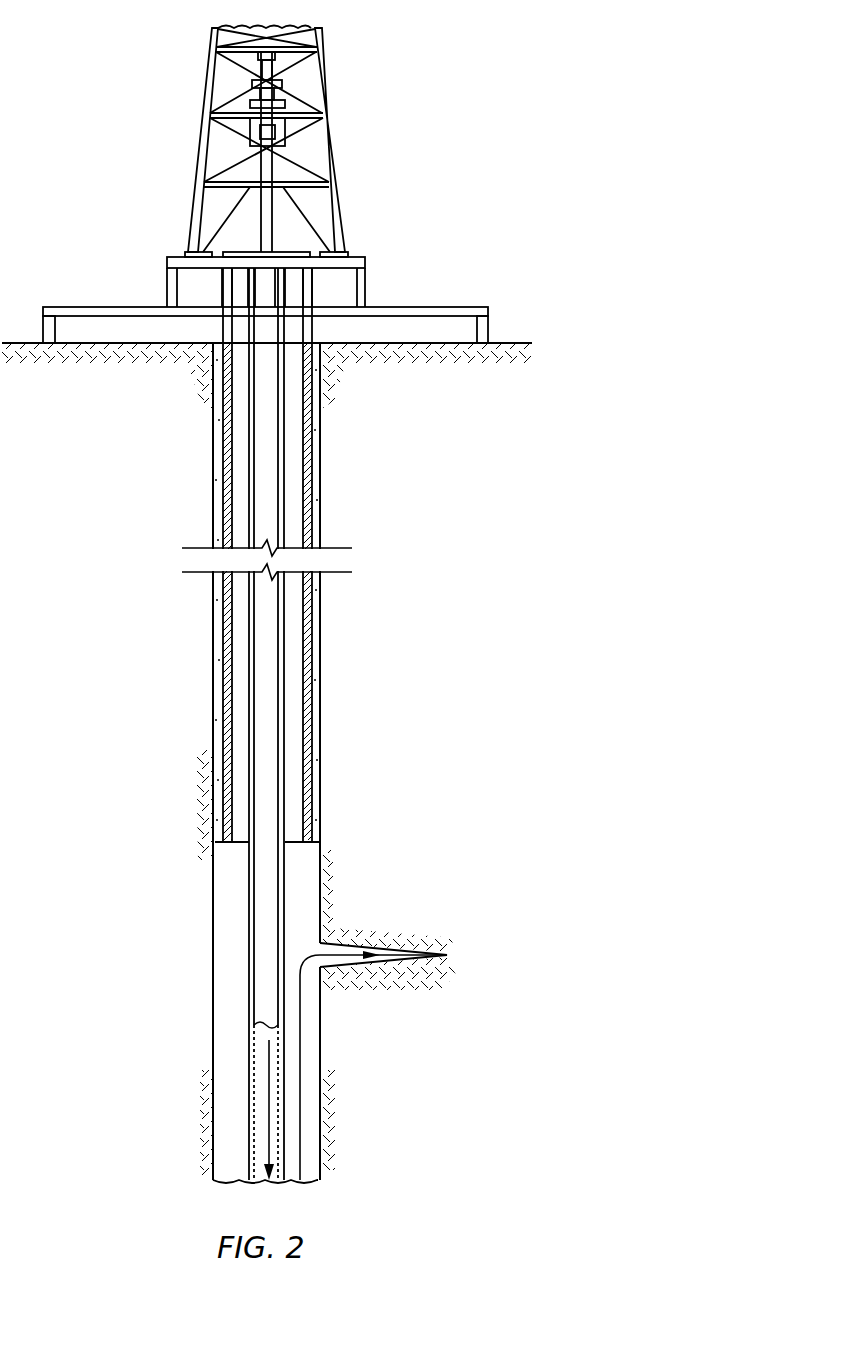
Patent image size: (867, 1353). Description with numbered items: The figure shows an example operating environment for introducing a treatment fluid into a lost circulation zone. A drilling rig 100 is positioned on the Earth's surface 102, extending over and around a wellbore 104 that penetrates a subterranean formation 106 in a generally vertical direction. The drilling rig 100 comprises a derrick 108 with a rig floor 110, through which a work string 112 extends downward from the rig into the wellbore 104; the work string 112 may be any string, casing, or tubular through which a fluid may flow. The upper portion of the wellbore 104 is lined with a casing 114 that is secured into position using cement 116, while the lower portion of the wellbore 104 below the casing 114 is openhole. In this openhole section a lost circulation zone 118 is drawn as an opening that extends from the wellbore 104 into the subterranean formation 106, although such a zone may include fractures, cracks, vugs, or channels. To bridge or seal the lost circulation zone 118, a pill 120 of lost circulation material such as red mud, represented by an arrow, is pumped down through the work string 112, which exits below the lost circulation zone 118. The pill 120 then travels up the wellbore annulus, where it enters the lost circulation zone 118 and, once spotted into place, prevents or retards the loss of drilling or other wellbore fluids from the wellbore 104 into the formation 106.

The drilling rig 100 is at (445, 120).
The Earth's surface 102 is at (510, 343).
The wellbore 104 is at (210, 462).
The subterranean formation 106 is at (357, 358).
The derrick 108 is at (205, 82).
The rig floor 110 is at (80, 306).
The work string 112 is at (285, 685).
The casing 114 is at (221, 716).
The cement 116 is at (217, 762).
The lost circulation zone 118 is at (468, 942).
The pill 120 is at (267, 1122).